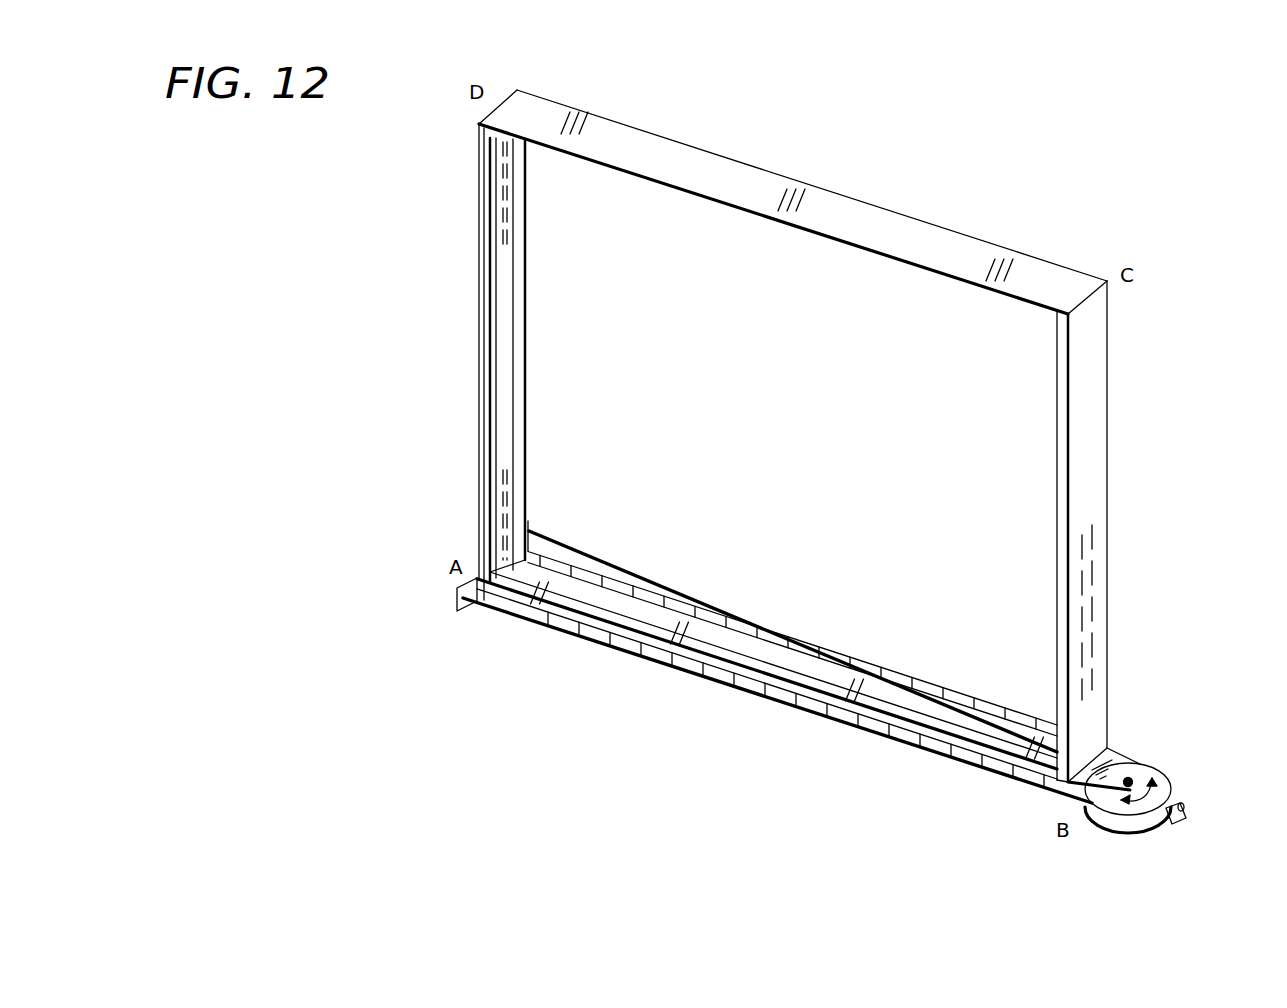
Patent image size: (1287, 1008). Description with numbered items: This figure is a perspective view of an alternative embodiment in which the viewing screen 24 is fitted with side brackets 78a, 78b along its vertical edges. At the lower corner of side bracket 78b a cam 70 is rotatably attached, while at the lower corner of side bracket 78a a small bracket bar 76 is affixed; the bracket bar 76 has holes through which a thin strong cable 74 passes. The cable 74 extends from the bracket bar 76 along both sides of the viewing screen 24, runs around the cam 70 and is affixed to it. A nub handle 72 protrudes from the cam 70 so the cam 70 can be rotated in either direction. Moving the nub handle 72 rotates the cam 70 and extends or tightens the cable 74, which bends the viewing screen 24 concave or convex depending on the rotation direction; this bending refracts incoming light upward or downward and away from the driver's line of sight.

The viewing screen 24 is at (776, 428).
The cam 70 is at (1170, 787).
The nub handle 72 is at (1188, 817).
The cable 74 is at (891, 737).
The bracket bar 76 is at (457, 596).
The side bracket 78a is at (479, 272).
The side bracket 78b is at (1105, 481).